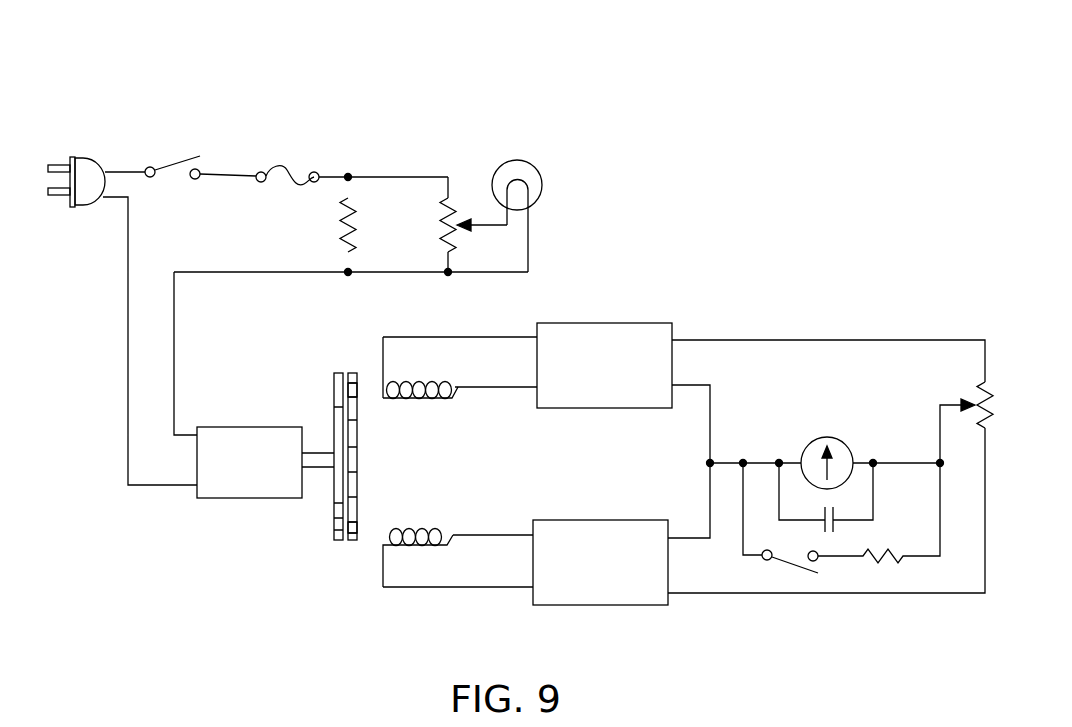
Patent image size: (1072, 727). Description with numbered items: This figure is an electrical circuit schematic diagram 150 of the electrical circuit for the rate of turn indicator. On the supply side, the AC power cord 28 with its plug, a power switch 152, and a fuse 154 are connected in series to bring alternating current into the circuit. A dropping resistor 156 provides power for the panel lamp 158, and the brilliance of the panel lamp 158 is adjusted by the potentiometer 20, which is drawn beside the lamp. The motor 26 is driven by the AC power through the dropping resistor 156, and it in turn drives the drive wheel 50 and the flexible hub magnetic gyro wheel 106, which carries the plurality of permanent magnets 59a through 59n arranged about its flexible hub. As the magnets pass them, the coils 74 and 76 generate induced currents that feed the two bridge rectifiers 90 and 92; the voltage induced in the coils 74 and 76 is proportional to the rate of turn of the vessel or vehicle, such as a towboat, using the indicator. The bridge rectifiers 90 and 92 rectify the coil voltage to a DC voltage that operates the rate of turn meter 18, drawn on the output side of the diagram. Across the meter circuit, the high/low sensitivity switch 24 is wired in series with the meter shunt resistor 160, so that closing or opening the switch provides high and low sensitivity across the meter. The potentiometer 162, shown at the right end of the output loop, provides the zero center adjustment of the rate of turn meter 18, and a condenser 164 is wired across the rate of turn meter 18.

The electrical circuit schematic diagram 150 is at (806, 94).
The AC power cord 28 is at (85, 155).
The power switch 152 is at (178, 160).
The fuse 154 is at (288, 166).
The dropping resistor 156 is at (364, 229).
The potentiometer 20 is at (455, 207).
The panel lamp 158 is at (530, 165).
The motor 26 is at (235, 427).
The drive wheel 50 is at (337, 393).
The flexible hub magnetic gyro wheel 106 is at (355, 375).
The permanent magnet 59a is at (357, 393).
The permanent magnet 59n is at (357, 527).
The coil 74 is at (455, 398).
The coil 76 is at (452, 527).
The bridge rectifier 90 is at (587, 323).
The bridge rectifier 92 is at (627, 520).
The rate of turn meter 18 is at (845, 447).
The condenser 164 is at (837, 517).
The meter shunt resistor 160 is at (895, 546).
The potentiometer 162 is at (990, 407).
The high/low sensitivity switch 24 is at (788, 562).